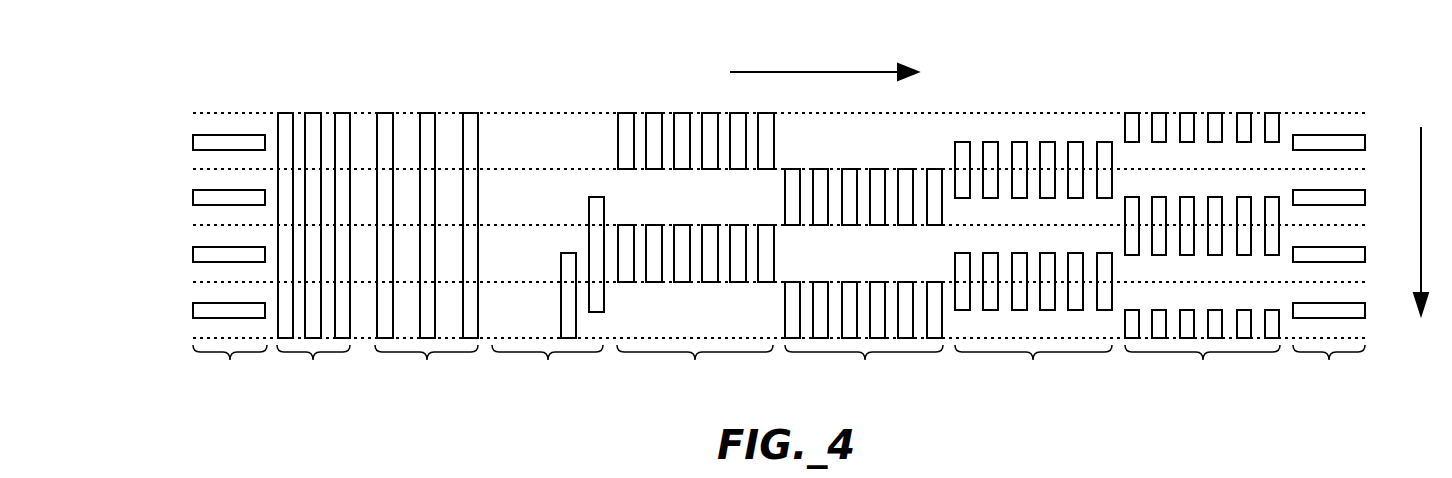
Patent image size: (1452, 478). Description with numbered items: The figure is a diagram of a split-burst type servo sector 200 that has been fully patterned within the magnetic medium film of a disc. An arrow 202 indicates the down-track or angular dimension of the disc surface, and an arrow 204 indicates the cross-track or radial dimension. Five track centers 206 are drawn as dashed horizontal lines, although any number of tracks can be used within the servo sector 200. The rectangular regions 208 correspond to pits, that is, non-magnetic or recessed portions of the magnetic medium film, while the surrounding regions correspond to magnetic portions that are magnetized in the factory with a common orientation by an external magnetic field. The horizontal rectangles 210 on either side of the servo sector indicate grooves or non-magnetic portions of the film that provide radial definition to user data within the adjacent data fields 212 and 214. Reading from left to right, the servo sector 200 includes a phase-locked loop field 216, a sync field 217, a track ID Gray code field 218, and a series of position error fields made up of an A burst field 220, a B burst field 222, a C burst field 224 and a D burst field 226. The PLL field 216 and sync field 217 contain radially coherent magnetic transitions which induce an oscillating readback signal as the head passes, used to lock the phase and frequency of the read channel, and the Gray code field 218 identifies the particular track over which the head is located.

The split-burst type servo sector 200 is at (1083, 91).
The arrow 202 is at (811, 71).
The arrow 204 is at (1421, 150).
The track centers 206 is at (746, 230).
The rectangular regions 208 is at (350, 135).
The horizontal rectangles 210 is at (218, 135).
The data field 212 is at (230, 361).
The data field 214 is at (1329, 361).
The phase-locked loop (PLL) field 216 is at (313, 361).
The sync field 217 is at (427, 361).
The track ID Gray code field 218 is at (548, 361).
The A burst field 220 is at (695, 361).
The B burst field 222 is at (865, 361).
The C burst field 224 is at (1033, 361).
The D burst field 226 is at (1203, 361).